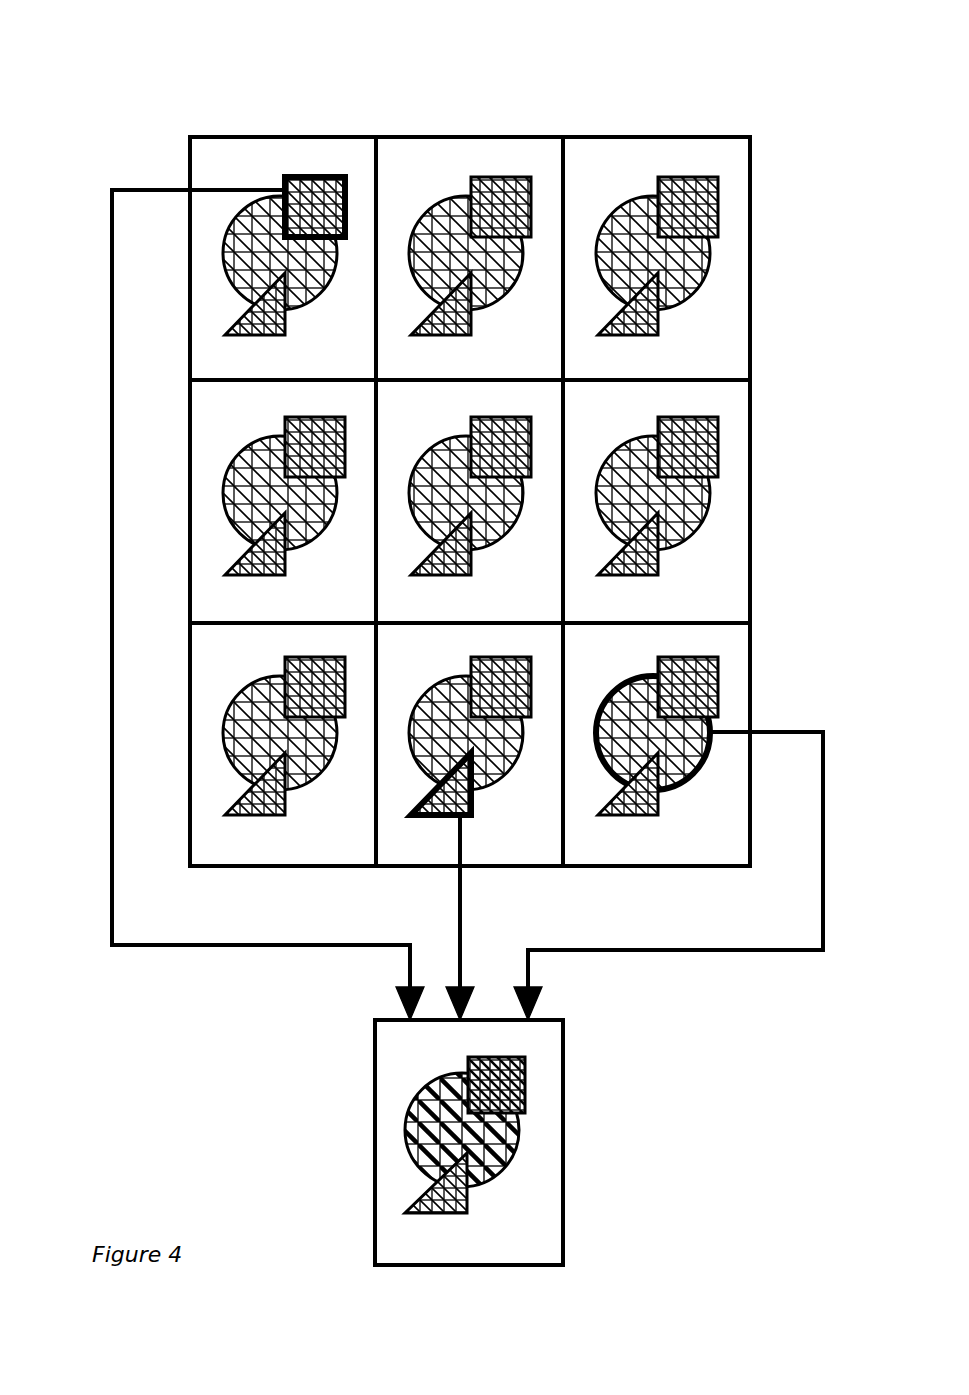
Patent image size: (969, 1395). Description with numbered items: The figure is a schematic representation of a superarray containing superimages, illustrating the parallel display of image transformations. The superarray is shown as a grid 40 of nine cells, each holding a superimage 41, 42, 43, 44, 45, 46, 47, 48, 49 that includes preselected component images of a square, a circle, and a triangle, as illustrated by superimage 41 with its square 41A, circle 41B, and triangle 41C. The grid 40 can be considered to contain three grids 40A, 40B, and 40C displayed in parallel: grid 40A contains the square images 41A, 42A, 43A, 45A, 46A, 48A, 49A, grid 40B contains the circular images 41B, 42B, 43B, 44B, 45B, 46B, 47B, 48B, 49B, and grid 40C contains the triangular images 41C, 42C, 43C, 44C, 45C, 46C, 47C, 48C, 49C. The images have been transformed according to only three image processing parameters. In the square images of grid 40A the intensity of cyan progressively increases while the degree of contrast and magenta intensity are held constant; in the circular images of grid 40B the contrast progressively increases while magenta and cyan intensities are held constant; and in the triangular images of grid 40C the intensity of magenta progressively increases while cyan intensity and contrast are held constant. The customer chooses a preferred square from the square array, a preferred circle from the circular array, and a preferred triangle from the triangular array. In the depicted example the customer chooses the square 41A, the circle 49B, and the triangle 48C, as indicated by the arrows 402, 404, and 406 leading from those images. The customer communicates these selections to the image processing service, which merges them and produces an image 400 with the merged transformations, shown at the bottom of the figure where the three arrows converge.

The grid 40 is at (200, 100).
The grid 40A is at (740, 220).
The grid 40B is at (735, 265).
The grid 40C is at (685, 300).
The superimage 41 is at (286, 263).
The square 41A is at (305, 178).
The circle 41B is at (242, 272).
The triangle 41C is at (250, 335).
The superimage 42 is at (472, 263).
The square image 42A is at (491, 178).
The circular image 42B is at (428, 272).
The triangular image 42C is at (436, 335).
The superimage 43 is at (737, 263).
The square image 43A is at (720, 194).
The circular image 43B is at (737, 253).
The triangular image 43C is at (738, 323).
The superimage 44 is at (286, 503).
The circular image 44B is at (242, 512).
The triangular image 44C is at (250, 575).
The superimage 45 is at (472, 503).
The square image 45A is at (491, 418).
The circular image 45B is at (428, 512).
The triangular image 45C is at (436, 575).
The superimage 46 is at (659, 503).
The square image 46A is at (678, 418).
The circular image 46B is at (615, 512).
The triangular image 46C is at (623, 575).
The superimage 47 is at (286, 743).
The circular image 47B is at (242, 752).
The triangular image 47C is at (250, 815).
The superimage 48 is at (461, 743).
The square image 48A is at (491, 658).
The circular image 48B is at (428, 752).
The triangular image 48C is at (455, 815).
The superimage 49 is at (659, 743).
The square image 49A is at (678, 658).
The circular image 49B is at (615, 752).
The triangular image 49C is at (623, 815).
The image 400 is at (530, 1223).
The arrow 402 is at (110, 655).
The arrow 404 is at (680, 952).
The arrow 406 is at (459, 893).